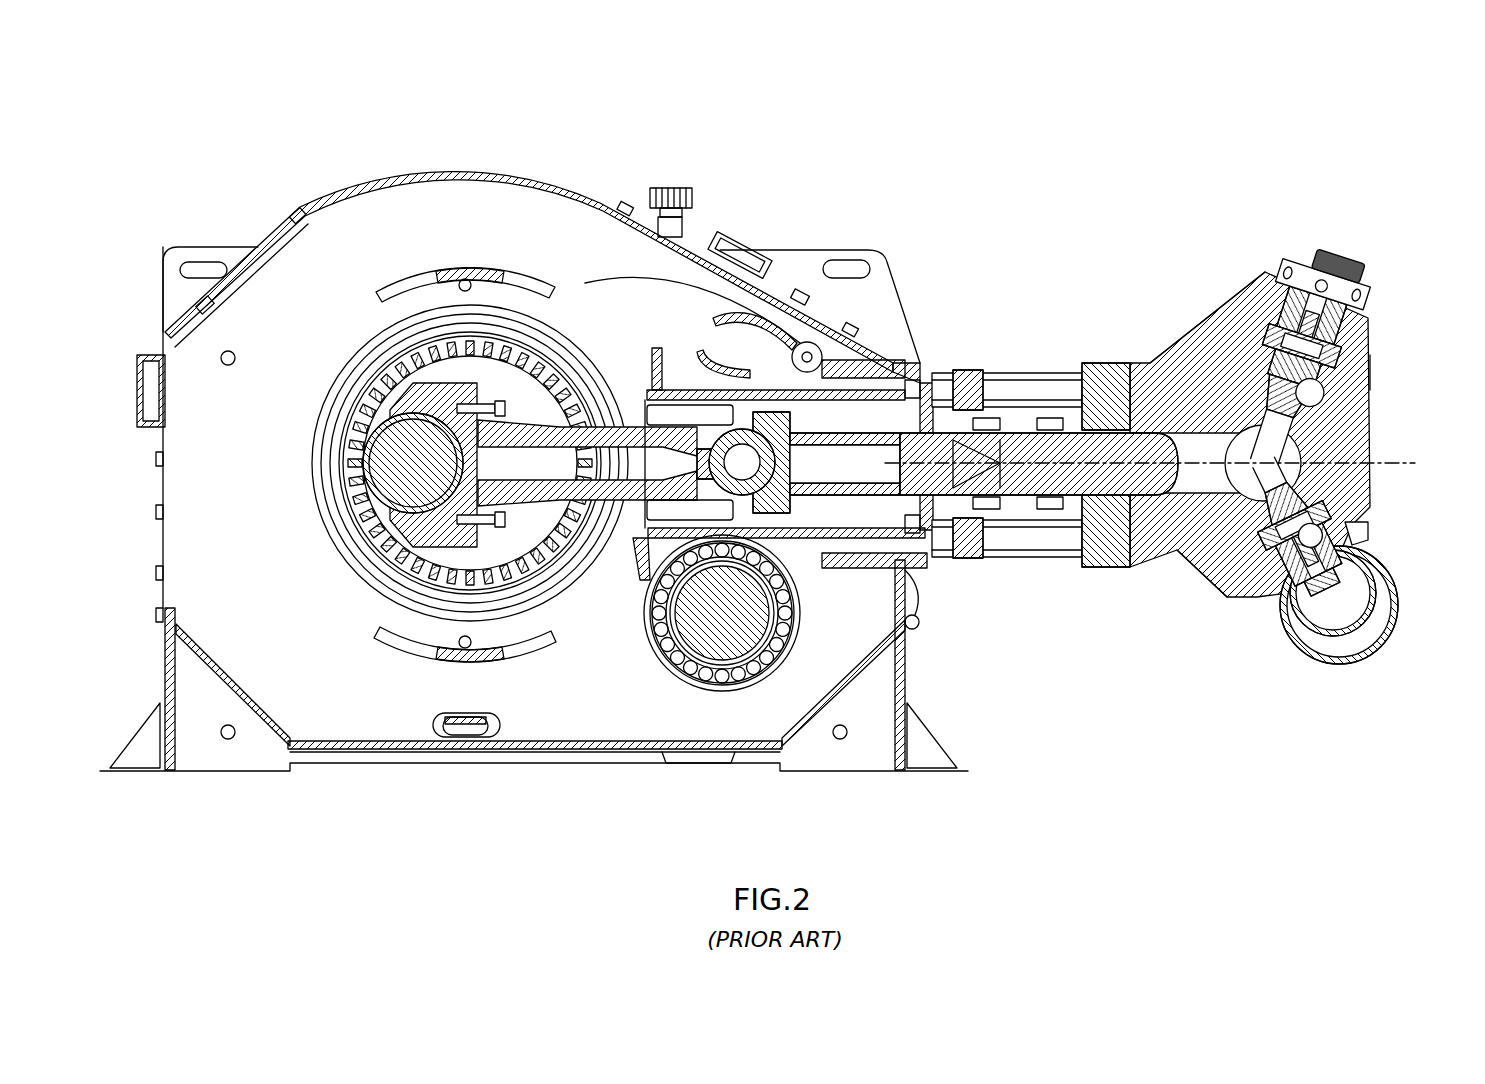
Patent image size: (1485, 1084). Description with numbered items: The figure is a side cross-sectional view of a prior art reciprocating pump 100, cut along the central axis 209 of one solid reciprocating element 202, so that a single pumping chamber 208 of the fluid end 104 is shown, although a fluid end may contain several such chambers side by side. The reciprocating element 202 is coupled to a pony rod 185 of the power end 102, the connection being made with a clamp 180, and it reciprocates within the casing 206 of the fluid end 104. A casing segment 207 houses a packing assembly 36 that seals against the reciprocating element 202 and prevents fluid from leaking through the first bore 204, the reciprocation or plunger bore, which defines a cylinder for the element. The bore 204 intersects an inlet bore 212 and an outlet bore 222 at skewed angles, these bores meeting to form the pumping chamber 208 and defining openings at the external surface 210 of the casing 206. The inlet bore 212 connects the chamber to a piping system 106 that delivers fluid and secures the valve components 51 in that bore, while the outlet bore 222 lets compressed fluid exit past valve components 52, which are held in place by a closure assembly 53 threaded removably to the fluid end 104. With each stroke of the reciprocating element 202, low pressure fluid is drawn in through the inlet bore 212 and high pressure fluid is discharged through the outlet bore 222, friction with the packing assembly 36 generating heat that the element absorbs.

The reciprocating pump 100 is at (1340, 110).
The power end 102 is at (365, 220).
The fluid end 104 is at (1409, 269).
The piping system 106 is at (1340, 660).
The packing assembly 36 is at (1108, 363).
The valve components 51 is at (1240, 597).
The valve components 52 is at (1227, 452).
The closure assembly 53 is at (1283, 268).
The clamp 180 is at (973, 508).
The pony rod 185 is at (915, 363).
The solid reciprocating element 202 is at (1127, 560).
The first bore 204 is at (1050, 373).
The casing 206 is at (1238, 292).
The casing segment 207 is at (1190, 575).
The pumping chamber 208 is at (1160, 373).
The central axis 209 is at (1412, 462).
The external surface 210 is at (1372, 372).
The inlet bore 212 is at (1367, 538).
The outlet bore 222 is at (1414, 401).